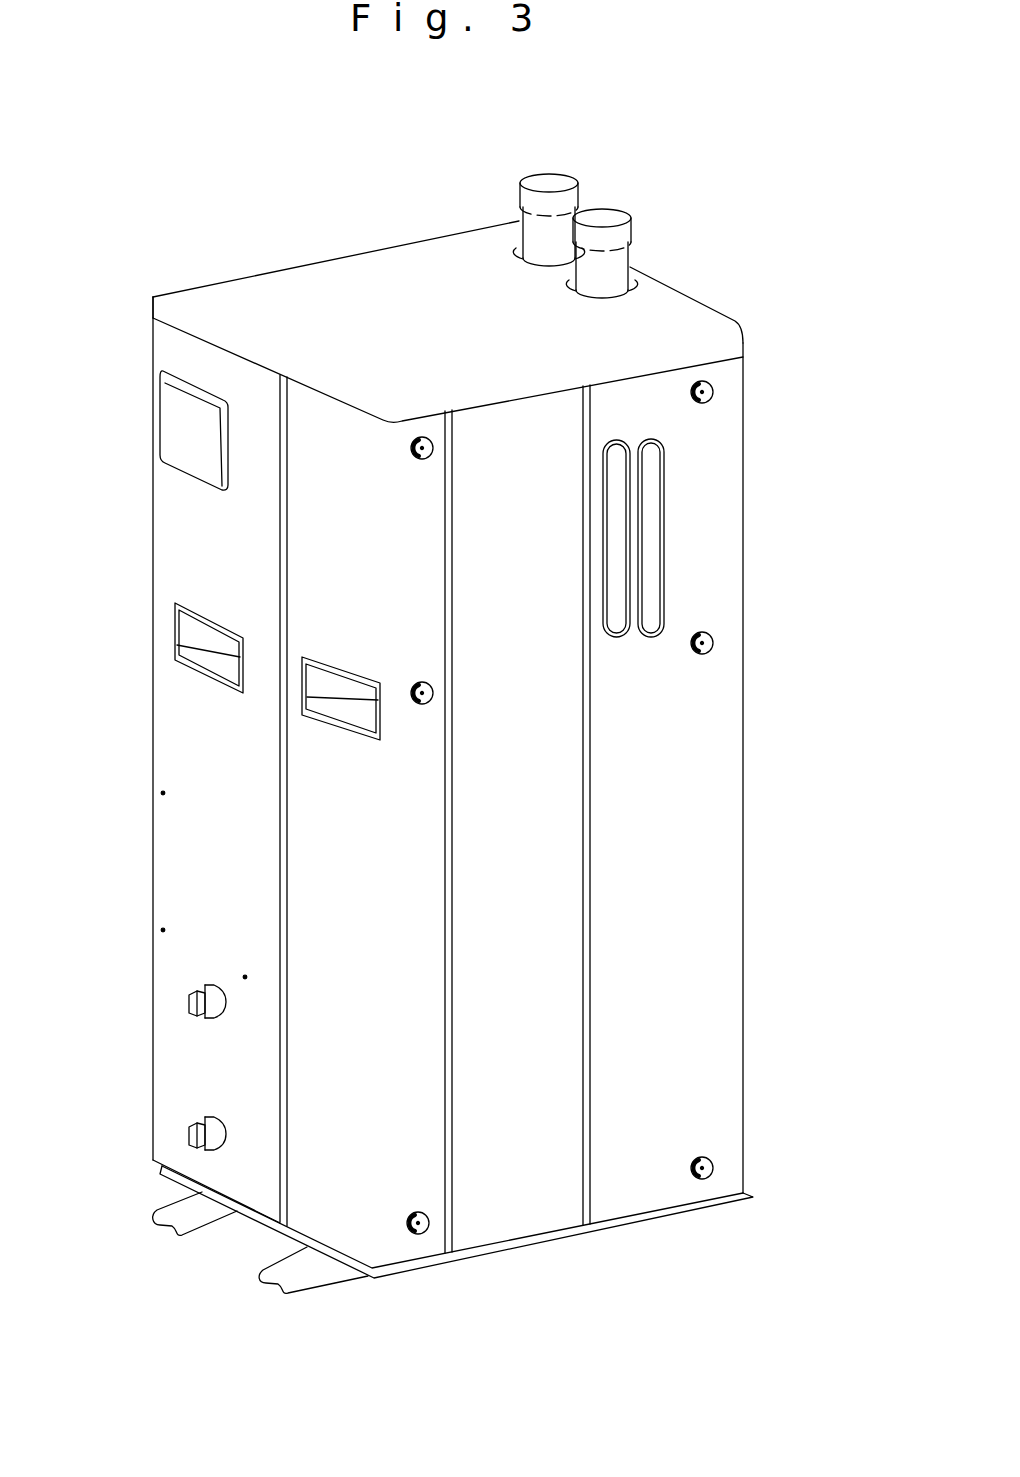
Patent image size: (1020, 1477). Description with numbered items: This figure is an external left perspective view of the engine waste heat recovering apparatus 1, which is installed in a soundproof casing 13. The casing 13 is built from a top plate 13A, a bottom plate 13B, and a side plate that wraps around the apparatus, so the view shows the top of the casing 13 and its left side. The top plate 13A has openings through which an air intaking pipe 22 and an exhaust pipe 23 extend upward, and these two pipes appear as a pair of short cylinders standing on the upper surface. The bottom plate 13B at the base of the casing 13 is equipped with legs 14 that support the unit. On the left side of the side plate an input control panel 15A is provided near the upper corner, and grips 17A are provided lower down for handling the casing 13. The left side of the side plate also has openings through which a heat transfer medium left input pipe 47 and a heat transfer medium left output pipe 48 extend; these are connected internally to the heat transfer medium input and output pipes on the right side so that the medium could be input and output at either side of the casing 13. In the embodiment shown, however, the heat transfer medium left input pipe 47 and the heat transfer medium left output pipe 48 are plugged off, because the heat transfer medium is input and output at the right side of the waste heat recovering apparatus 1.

The waste heat recovering apparatus 1 is at (141, 864).
The soundproof casing 13 is at (748, 799).
The top plate 13A is at (687, 338).
The bottom plate 13B is at (622, 1227).
The legs 14 is at (262, 1275).
The input control panel 15A is at (181, 440).
The grips 17A is at (303, 700).
The air intaking pipe 22 is at (607, 214).
The exhaust pipe 23 is at (547, 182).
The heat transfer medium left input pipe 47 is at (214, 1115).
The heat transfer medium left output pipe 48 is at (222, 1020).